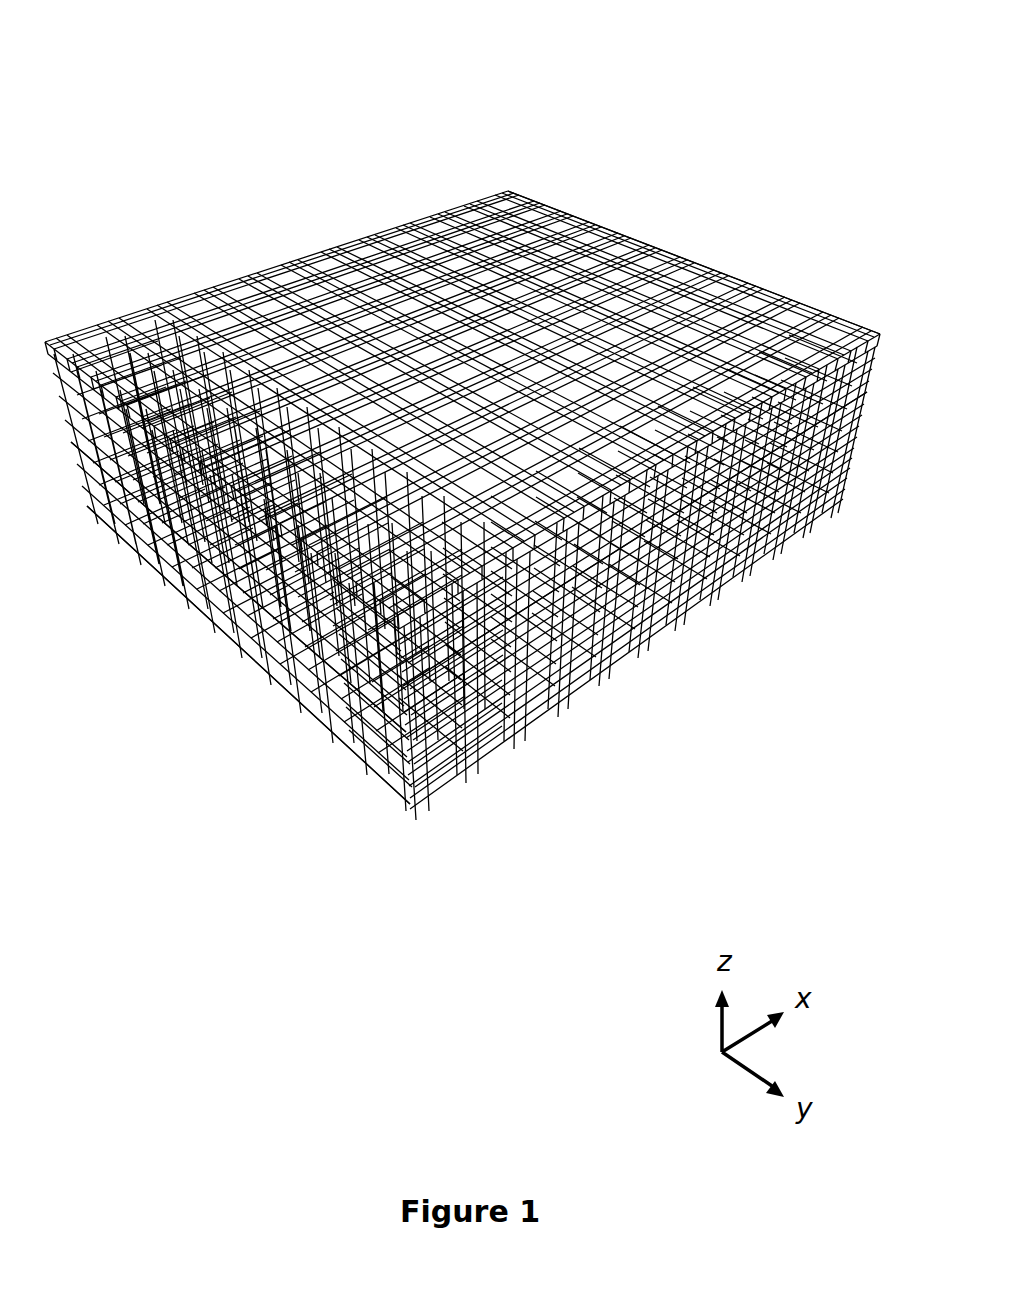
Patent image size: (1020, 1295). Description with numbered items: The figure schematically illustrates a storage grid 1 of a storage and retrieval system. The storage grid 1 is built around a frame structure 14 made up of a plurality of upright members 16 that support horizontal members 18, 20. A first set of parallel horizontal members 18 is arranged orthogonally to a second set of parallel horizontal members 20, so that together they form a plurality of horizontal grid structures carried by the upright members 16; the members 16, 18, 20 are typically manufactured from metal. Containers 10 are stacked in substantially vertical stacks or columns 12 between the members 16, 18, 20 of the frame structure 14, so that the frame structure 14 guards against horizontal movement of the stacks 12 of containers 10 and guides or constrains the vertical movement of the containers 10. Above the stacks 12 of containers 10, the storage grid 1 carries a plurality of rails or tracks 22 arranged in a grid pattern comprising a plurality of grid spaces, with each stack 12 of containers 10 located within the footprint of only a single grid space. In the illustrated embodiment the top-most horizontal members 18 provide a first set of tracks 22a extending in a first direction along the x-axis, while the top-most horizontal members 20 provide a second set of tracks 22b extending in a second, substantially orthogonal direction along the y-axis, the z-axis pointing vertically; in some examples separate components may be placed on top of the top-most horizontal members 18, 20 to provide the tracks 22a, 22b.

The storage grid 1 is at (464, 493).
The containers 10 is at (543, 553).
The stacks 12 is at (423, 740).
The frame structure 14 is at (733, 284).
The upright members 16 is at (312, 688).
The first set of parallel horizontal members 18 is at (747, 507).
The second set of parallel horizontal members 20 is at (262, 614).
The rails or tracks 22 is at (456, 328).
The first set of tracks 22a is at (262, 418).
The second set of tracks 22b is at (177, 376).